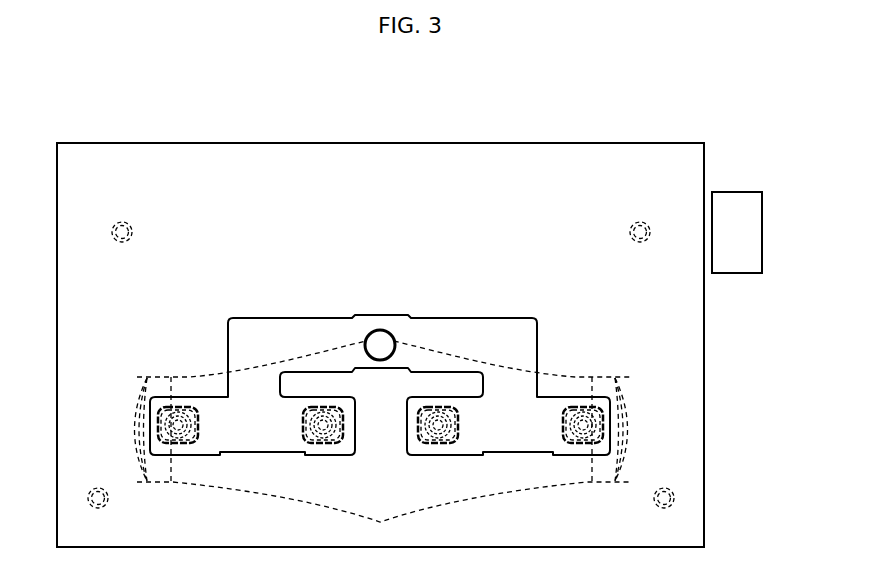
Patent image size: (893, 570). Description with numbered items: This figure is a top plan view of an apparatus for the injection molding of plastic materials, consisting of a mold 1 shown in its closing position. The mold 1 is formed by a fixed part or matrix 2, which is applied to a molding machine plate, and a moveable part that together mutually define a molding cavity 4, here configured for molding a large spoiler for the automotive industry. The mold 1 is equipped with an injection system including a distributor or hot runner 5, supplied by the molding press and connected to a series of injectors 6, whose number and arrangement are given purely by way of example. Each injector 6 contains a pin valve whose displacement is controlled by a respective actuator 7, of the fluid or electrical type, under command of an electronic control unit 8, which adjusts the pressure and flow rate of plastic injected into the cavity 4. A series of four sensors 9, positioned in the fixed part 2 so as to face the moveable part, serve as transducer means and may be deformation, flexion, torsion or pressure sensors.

The mold 1 is at (633, 104).
The fixed part or matrix 2 is at (243, 158).
The molding cavity 4 is at (557, 376).
The distributor or hot runner 5 is at (459, 324).
The injector 6 is at (196, 441).
The actuator 7 is at (195, 409).
The electronic control unit 8 is at (740, 197).
The sensor 9 is at (132, 231).